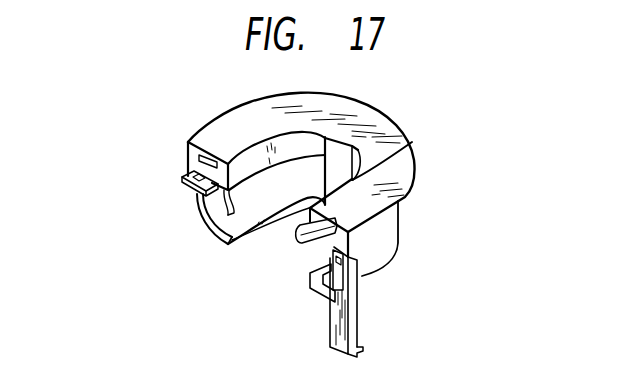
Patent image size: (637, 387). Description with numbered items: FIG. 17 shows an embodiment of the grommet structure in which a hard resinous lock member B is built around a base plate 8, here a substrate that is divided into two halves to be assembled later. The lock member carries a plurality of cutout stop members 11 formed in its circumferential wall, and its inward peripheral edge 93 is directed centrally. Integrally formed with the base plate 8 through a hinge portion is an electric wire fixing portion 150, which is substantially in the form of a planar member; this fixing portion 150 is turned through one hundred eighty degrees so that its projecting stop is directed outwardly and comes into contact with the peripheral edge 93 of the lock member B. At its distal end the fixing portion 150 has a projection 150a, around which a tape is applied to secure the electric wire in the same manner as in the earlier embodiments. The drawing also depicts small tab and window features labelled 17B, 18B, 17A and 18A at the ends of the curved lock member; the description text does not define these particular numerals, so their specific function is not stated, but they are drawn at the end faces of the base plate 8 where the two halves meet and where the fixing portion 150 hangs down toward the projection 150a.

The base plate 8 is at (356, 110).
The window 17B is at (201, 158).
The terminal 18B is at (188, 176).
The tongue 17A is at (312, 245).
The terminal pin 18A is at (330, 260).
The inward peripheral edge 93 is at (311, 289).
The electric wire fixing portion 150 is at (357, 292).
The cutout stop member 11 is at (359, 316).
The projection 150a is at (362, 352).